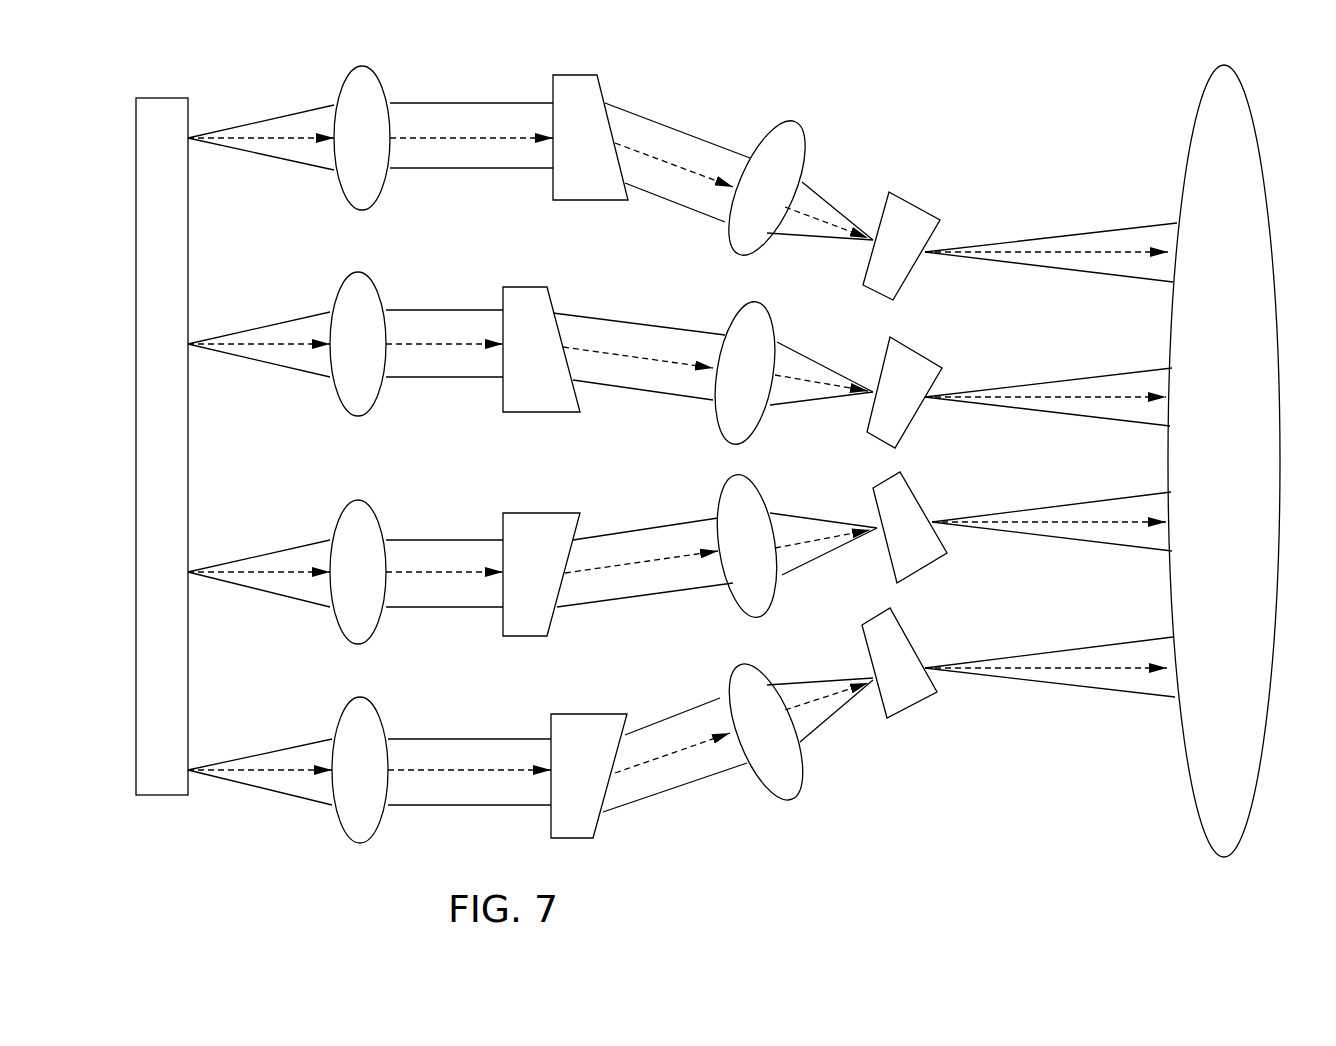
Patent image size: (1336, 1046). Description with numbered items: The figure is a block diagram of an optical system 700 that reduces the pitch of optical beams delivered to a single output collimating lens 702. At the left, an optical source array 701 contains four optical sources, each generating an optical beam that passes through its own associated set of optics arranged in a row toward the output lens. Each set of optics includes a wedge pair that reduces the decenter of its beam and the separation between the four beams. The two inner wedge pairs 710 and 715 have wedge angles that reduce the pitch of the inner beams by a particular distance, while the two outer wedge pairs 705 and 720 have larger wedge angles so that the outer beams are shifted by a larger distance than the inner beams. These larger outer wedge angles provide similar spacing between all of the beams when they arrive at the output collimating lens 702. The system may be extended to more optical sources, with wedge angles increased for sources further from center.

The optical system 700 is at (218, 56).
The optical source array 701 is at (165, 797).
The output collimating lens 702 is at (1188, 778).
The outer wedge pair 705 is at (600, 90).
The inner wedge pair 710 is at (551, 292).
The inner wedge pair 715 is at (895, 567).
The outer wedge pair 720 is at (908, 712).